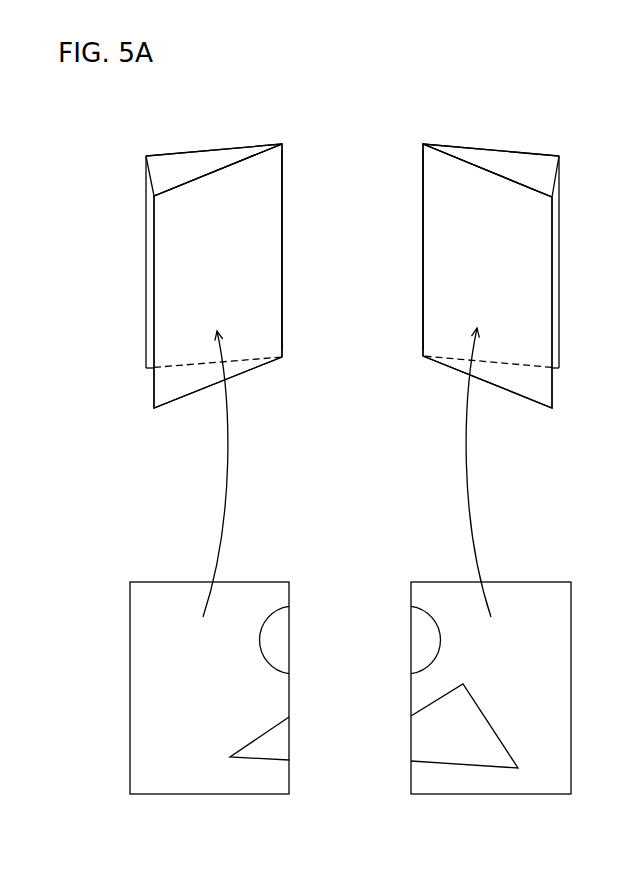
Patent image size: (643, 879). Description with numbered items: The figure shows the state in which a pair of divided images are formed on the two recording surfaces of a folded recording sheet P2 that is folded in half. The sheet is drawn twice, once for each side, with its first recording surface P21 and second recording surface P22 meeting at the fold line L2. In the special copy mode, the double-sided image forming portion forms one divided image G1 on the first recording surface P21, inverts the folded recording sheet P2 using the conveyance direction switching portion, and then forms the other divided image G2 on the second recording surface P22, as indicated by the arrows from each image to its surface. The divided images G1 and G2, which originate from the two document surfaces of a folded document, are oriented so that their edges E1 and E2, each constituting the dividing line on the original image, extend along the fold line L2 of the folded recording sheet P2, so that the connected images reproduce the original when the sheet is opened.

The folded recording sheet P2 is at (146, 207).
The first recording surface P21 is at (163, 166).
The second recording surface P22 is at (202, 203).
The fold line L2 is at (285, 243).
The divided image G1 is at (547, 581).
The divided image G2 is at (270, 581).
The edge E1 is at (411, 698).
The edge E2 is at (290, 635).